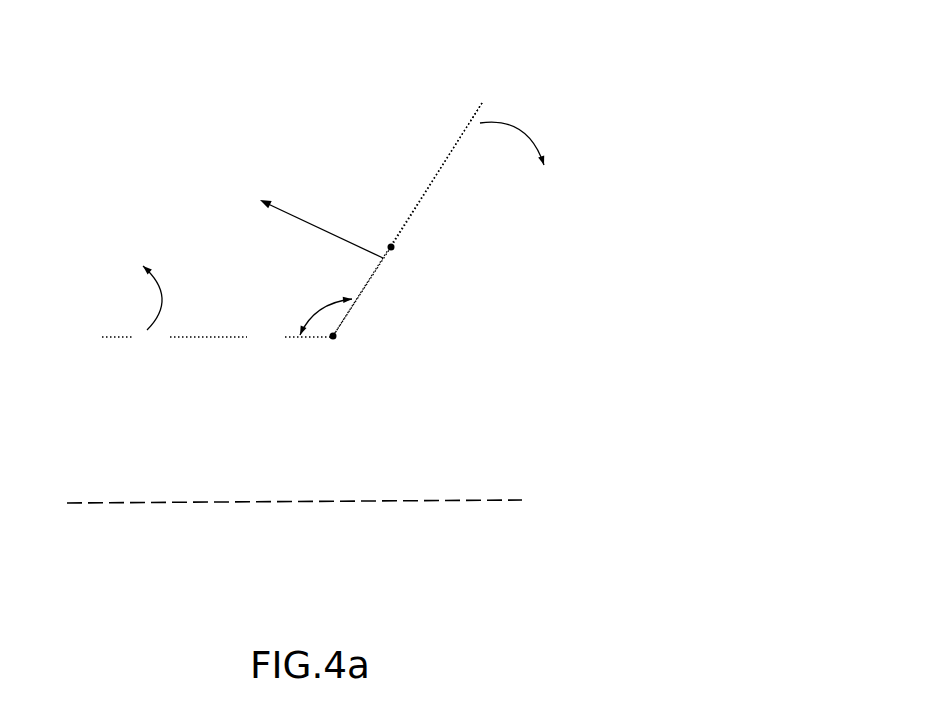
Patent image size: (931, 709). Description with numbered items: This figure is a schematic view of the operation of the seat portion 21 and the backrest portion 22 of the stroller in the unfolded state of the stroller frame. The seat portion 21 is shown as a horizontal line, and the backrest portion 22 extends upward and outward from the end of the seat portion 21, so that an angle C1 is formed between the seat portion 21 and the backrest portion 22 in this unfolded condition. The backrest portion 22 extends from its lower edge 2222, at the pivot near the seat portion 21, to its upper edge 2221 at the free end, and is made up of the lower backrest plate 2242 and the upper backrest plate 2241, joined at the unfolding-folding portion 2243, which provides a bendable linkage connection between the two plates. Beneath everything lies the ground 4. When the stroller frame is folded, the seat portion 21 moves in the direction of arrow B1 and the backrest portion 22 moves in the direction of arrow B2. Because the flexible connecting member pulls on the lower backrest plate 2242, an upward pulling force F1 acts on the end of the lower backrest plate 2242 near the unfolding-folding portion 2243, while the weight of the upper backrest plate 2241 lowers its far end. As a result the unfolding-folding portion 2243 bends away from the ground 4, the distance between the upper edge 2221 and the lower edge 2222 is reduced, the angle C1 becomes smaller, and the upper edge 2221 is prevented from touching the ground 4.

The backrest portion 22 is at (457, 144).
The upper edge 2221 is at (482, 102).
The lower edge 2222 is at (333, 336).
The upper backrest plate 2241 is at (423, 198).
The lower backrest plate 2242 is at (345, 319).
The unfolding-folding portion 2243 is at (391, 247).
The seat portion 21 is at (243, 337).
The ground 4 is at (482, 509).
The upward pulling force F1 is at (321, 232).
The angle between seat portion and backrest portion (unfolded) C1 is at (313, 302).
The folding direction of seat portion B1 is at (180, 298).
The folding direction of backrest portion B2 is at (526, 125).